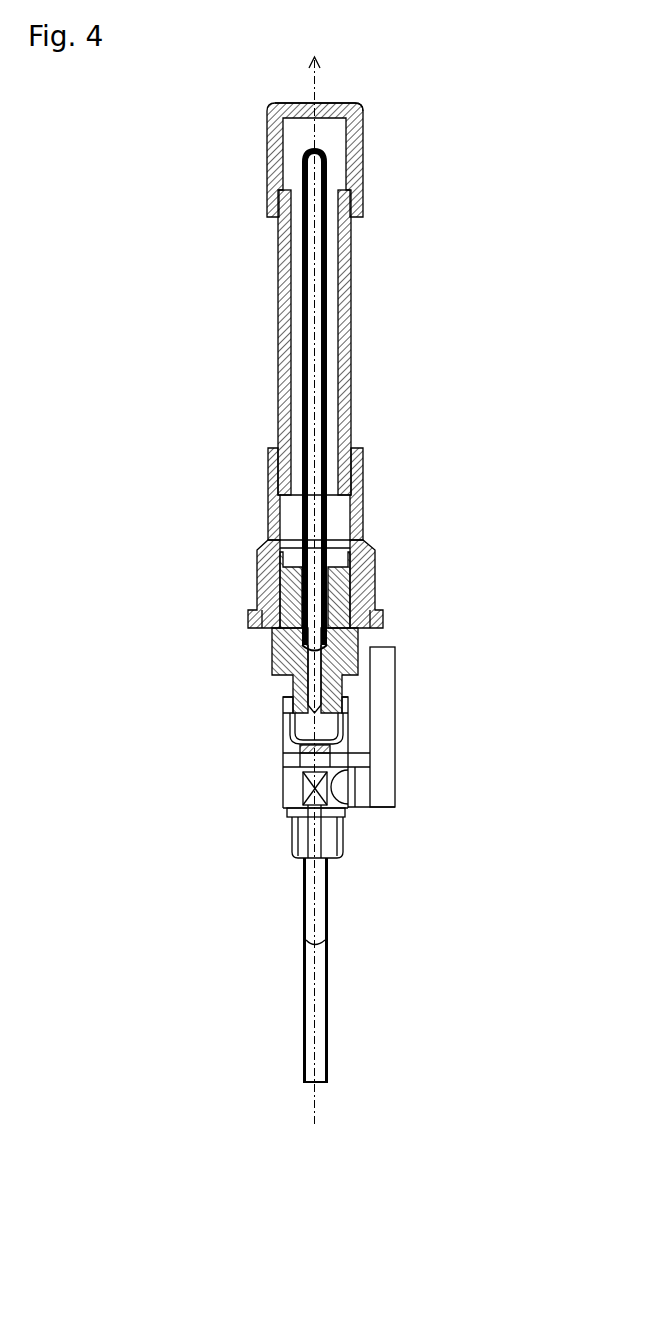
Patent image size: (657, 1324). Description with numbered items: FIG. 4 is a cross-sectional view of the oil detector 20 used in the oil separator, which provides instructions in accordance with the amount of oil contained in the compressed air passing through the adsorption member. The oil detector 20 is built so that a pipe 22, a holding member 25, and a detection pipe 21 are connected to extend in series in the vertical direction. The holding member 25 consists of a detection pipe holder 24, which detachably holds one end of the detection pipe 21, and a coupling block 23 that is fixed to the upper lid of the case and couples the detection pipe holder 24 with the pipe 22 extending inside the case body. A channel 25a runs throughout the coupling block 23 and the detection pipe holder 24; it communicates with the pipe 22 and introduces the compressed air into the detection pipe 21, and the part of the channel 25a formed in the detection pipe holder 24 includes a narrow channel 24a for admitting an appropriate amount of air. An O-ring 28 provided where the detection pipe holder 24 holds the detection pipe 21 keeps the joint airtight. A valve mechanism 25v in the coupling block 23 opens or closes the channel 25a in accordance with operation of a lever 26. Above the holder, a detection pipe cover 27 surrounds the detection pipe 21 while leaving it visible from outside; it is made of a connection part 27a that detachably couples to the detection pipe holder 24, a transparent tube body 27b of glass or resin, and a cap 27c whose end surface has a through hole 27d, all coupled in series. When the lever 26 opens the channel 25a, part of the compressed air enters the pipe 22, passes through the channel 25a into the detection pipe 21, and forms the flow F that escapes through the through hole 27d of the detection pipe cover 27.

The oil detector 20 is at (434, 101).
The flow of the compressed air F is at (322, 84).
The detection pipe cover 27 is at (150, 156).
The connection part 27a is at (268, 487).
The tube body 27b is at (278, 356).
The cap 27c is at (267, 165).
The through hole 27d is at (300, 103).
The detection pipe 21 is at (328, 331).
The O-ring 28 is at (375, 578).
The holding member 25 is at (165, 643).
The detection pipe holder 24 is at (272, 658).
The channel 25a is at (287, 684).
The narrow channel 24a is at (284, 727).
The coupling block 23 is at (283, 783).
The valve mechanism 25v is at (332, 784).
The lever 26 is at (385, 693).
The pipe 22 is at (330, 968).